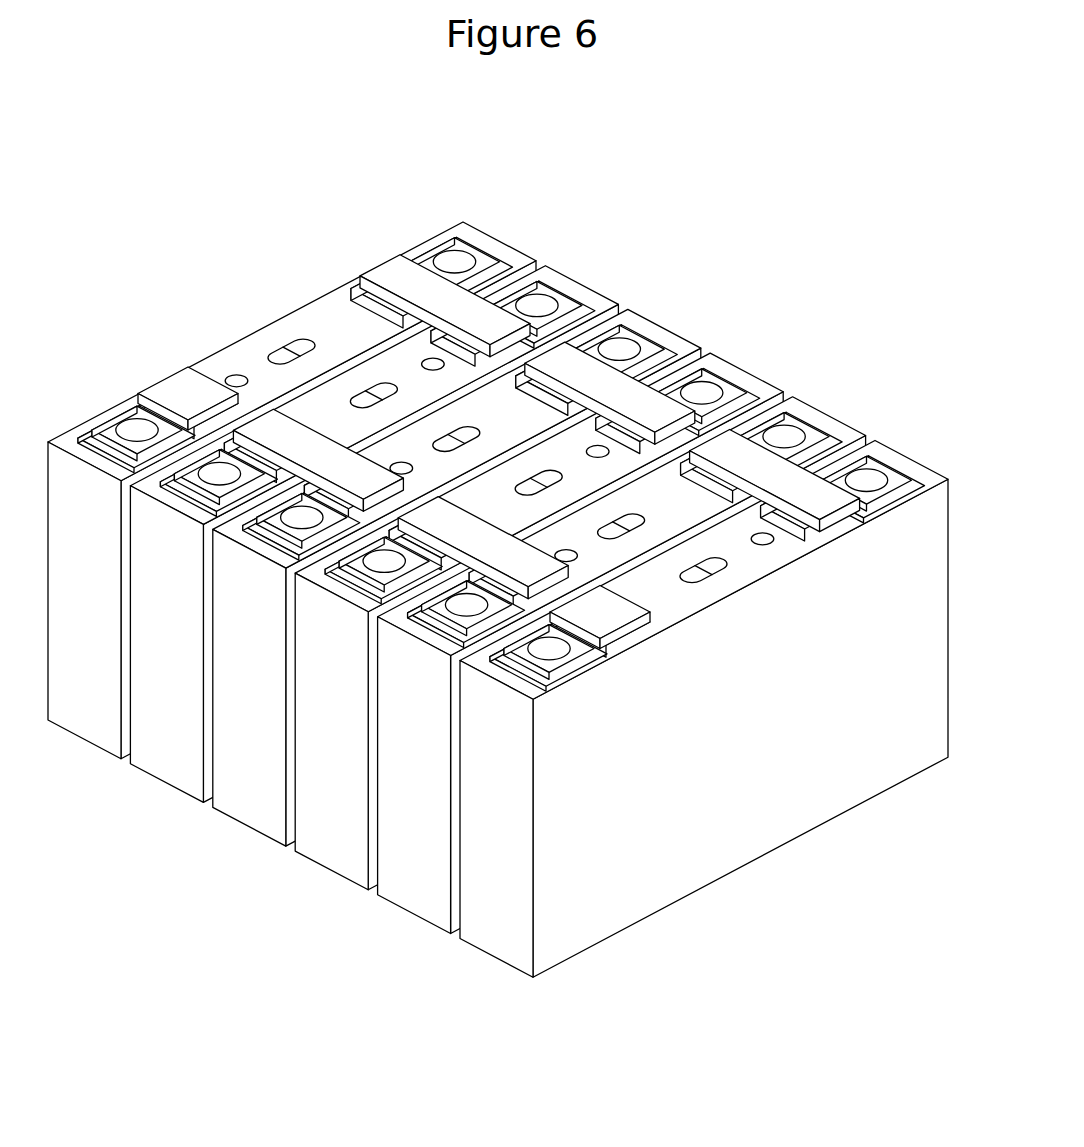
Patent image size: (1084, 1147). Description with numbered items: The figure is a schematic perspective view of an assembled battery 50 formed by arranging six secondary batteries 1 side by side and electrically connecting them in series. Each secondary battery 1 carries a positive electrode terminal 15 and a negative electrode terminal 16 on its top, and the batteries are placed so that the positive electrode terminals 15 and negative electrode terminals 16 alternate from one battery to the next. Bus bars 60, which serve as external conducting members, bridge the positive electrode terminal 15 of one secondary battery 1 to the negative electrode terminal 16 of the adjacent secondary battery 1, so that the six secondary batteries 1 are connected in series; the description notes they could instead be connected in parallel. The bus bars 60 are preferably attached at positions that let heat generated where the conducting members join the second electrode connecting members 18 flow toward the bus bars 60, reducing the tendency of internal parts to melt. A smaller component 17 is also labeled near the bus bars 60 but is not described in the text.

The secondary battery 1 is at (778, 806).
The positive electrode terminal 15 is at (864, 478).
The negative electrode terminal 16 is at (787, 436).
The insulating spacer 17 is at (792, 520).
The second electrode connecting member 18 is at (704, 468).
The assembled battery 50 is at (498, 571).
The bus bar 60 is at (746, 462).